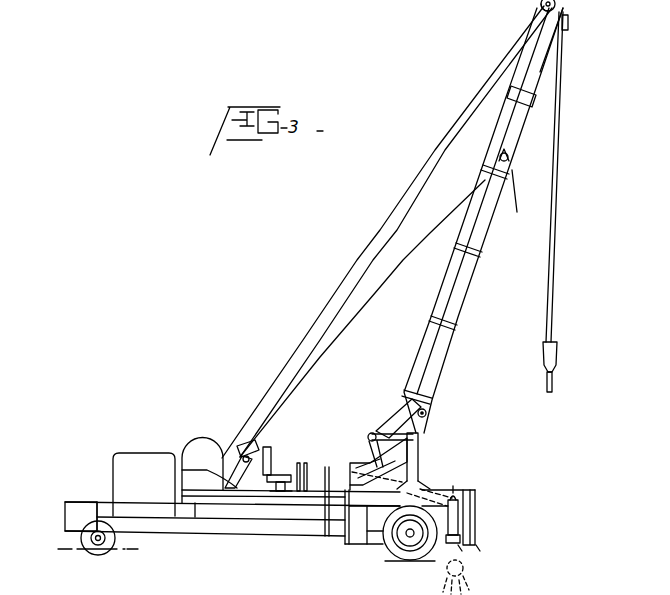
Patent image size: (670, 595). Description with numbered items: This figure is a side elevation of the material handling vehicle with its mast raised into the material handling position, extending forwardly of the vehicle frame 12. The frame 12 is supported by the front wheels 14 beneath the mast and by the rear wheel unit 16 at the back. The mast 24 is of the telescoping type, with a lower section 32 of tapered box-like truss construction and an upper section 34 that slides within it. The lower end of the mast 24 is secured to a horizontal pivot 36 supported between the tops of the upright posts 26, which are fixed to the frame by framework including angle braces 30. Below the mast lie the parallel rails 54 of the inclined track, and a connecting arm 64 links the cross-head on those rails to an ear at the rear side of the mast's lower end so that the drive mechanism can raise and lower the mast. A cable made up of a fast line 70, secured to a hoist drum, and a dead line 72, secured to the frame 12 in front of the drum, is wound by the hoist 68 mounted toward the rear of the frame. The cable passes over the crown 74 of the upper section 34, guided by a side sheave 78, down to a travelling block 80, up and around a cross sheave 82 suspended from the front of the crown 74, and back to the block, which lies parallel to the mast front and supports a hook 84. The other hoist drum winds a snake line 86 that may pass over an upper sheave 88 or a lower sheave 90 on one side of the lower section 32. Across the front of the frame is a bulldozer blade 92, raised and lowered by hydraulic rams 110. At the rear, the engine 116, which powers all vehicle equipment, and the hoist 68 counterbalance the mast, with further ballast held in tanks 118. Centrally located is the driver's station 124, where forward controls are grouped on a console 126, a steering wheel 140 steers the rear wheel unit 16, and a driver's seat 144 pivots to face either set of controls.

The vehicle frame 12 is at (223, 531).
The front wheels 14 is at (394, 544).
The rear wheel unit 16 is at (93, 550).
The mast 24 is at (484, 264).
The upright posts 26 is at (420, 456).
The angle braces 30 is at (368, 463).
The lower section 32 is at (450, 292).
The upper section 34 is at (541, 72).
The horizontal pivot 36 is at (427, 431).
The rails 54 is at (409, 489).
The connecting arm 64 is at (366, 436).
The hoist 68 is at (198, 450).
The fast line 70 is at (338, 300).
The dead line 72 is at (384, 243).
The crown 74 is at (536, 9).
The side sheave 78 is at (557, 8).
The travelling block 80 is at (558, 352).
The cross sheave 82 is at (570, 29).
The hook 84 is at (556, 385).
The snake line 86 is at (375, 293).
The upper sheave 88 is at (509, 158).
The lower sheave 90 is at (434, 394).
The bulldozer blade 92 is at (477, 528).
The hydraulic rams 110 is at (459, 522).
The engine 116 is at (125, 462).
The tanks 118 is at (75, 510).
The driver's station 124 is at (280, 494).
The console 126 is at (308, 473).
The steering wheel 140 is at (242, 440).
The driver's seat 144 is at (278, 458).